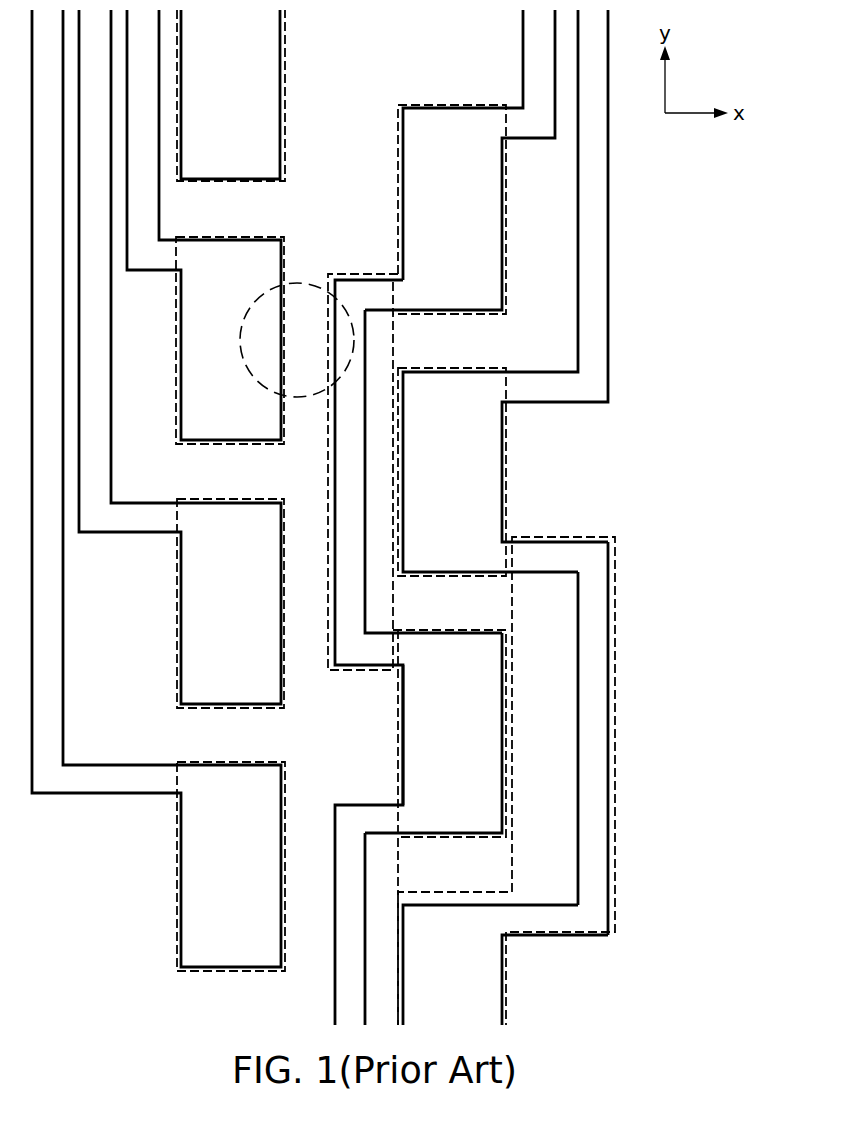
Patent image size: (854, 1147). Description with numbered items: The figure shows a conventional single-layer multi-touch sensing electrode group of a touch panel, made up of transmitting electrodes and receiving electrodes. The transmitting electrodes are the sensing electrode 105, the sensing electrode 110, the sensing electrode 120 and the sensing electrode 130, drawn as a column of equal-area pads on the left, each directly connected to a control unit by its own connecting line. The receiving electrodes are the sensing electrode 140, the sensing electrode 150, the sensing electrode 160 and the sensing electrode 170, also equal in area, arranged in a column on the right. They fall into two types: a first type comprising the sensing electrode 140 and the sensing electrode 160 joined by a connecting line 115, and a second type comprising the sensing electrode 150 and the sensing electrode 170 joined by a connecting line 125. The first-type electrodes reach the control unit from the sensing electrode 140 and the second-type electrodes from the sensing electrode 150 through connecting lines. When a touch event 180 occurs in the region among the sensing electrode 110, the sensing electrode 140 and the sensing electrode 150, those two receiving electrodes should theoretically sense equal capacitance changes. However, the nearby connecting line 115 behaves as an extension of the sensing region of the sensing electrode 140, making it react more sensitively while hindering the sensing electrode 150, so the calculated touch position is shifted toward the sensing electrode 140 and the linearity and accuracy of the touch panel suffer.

The sensing electrode 105 is at (286, 151).
The sensing electrode 110 is at (250, 237).
The connecting line 115 is at (378, 274).
The sensing electrode 120 is at (250, 499).
The connecting line 125 is at (548, 537).
The sensing electrode 130 is at (250, 762).
The sensing electrode 140 is at (470, 105).
The sensing electrode 150 is at (470, 368).
The sensing electrode 160 is at (470, 630).
The sensing electrode 170 is at (470, 892).
The touch event 180 is at (334, 284).